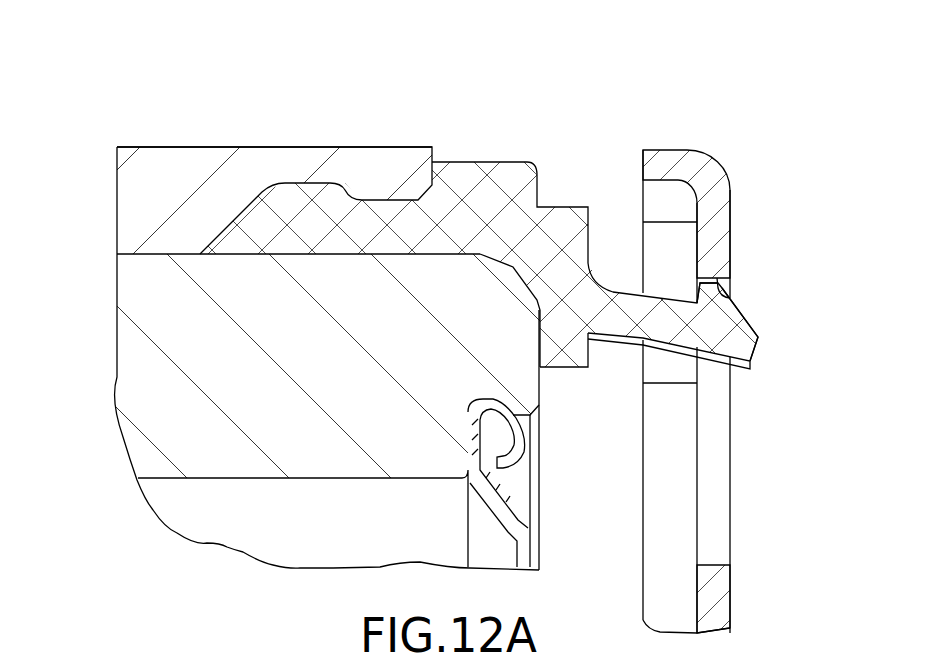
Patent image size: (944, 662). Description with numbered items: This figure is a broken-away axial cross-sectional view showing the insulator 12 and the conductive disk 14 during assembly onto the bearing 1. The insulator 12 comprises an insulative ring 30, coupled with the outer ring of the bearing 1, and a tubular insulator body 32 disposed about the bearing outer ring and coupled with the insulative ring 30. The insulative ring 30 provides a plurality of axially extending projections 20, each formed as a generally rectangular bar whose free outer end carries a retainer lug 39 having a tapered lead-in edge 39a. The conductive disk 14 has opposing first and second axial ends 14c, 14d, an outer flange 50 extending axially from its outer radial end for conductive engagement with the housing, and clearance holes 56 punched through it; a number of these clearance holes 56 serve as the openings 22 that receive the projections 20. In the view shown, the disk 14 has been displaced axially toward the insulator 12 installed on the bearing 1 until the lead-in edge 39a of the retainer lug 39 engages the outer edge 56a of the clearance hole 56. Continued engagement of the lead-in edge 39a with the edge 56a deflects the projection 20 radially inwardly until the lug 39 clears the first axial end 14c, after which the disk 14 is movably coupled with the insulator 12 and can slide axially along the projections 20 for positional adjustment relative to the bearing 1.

The bearing 1 is at (124, 362).
The insulator 12 is at (351, 105).
The conductive disk 14 is at (755, 407).
The first axial end 14c is at (730, 223).
The second axial end 14d is at (698, 585).
The projection 20 is at (762, 347).
The opening 22 is at (719, 477).
The insulative ring 30 is at (490, 145).
The tubular insulator body 32 is at (224, 130).
The retainer lug 39 is at (712, 292).
The tapered lead-in edge 39a is at (747, 314).
The outer flange 50 is at (668, 149).
The clearance hole 56 is at (715, 537).
The outer edge 56a is at (733, 296).